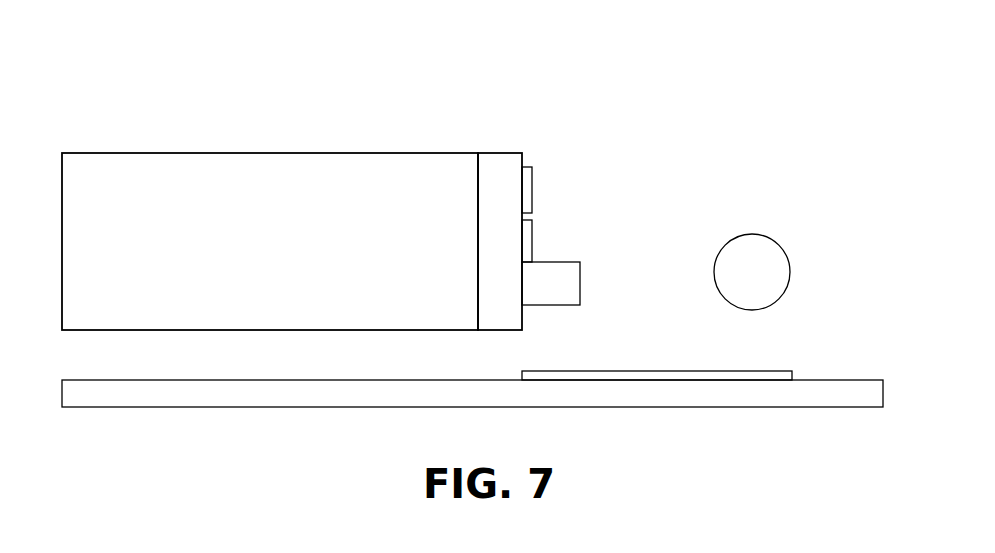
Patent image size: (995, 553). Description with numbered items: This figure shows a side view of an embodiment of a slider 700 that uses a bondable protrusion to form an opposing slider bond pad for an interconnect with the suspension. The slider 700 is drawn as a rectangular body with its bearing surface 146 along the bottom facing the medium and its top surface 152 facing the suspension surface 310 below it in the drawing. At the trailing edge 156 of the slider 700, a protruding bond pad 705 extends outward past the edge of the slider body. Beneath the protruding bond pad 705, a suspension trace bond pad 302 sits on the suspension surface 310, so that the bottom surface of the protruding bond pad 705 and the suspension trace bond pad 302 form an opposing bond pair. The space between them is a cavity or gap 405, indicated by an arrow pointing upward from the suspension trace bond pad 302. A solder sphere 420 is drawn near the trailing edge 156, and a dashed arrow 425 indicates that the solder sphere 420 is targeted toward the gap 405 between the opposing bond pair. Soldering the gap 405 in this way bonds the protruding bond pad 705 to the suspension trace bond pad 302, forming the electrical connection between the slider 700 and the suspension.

The slider 700 is at (696, 70).
The bearing surface 146 is at (236, 148).
The trailing edge 156 is at (531, 150).
The protruding bond pad 705 is at (570, 270).
The top surface 152 is at (65, 334).
The solder sphere 420 is at (771, 238).
The arrow 425 is at (587, 357).
The suspension trace bond pad 302 is at (778, 368).
The suspension surface 310 is at (832, 380).
The gap 405 is at (553, 357).